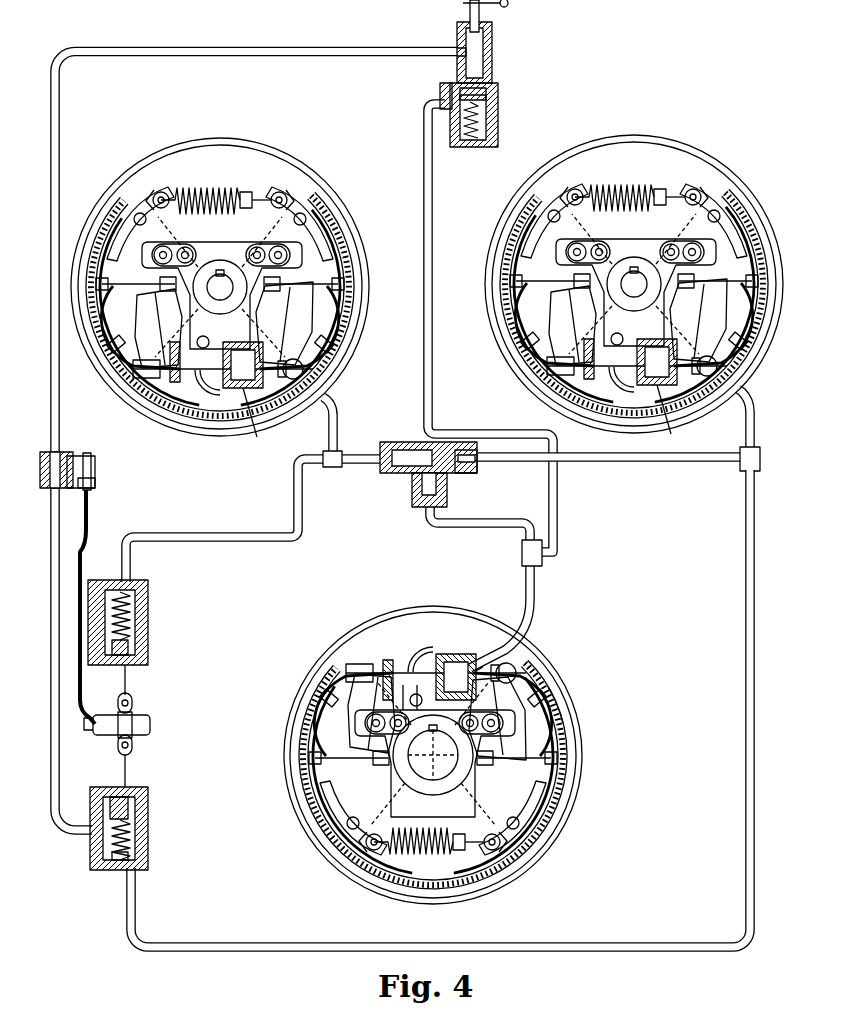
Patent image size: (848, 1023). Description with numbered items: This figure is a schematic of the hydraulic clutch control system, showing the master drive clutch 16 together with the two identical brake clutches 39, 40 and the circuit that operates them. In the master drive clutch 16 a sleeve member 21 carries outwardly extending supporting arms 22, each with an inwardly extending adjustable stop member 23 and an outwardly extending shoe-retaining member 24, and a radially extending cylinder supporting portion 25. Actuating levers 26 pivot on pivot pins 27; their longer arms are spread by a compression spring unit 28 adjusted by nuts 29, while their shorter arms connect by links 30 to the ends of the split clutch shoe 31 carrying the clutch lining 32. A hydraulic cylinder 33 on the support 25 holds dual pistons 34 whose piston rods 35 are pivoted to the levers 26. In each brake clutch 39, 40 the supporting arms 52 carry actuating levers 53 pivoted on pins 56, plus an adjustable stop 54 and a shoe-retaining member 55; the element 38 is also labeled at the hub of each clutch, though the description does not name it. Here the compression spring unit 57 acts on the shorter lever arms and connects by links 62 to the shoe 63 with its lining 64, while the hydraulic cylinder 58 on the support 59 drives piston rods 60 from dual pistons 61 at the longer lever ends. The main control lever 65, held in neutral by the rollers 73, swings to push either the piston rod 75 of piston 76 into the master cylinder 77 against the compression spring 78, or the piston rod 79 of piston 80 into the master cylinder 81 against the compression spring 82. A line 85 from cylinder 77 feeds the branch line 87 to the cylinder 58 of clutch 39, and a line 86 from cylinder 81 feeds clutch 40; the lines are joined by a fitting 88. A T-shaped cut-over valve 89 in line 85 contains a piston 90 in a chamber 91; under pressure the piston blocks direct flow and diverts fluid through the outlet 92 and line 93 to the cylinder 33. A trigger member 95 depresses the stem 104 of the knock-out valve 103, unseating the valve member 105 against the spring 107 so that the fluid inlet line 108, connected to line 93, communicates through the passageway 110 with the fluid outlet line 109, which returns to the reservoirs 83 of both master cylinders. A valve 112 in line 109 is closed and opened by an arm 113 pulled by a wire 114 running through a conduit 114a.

The master drive clutch 16 is at (520, 876).
The sleeve member 21 is at (403, 786).
The supporting arms 22 is at (505, 740).
The adjustable stop member 23 is at (312, 762).
The shoe-retaining member 24 is at (545, 815).
The cylinder supporting portion 25 is at (372, 712).
The actuating levers 26 is at (540, 688).
The pivot pin 27 is at (496, 722).
The compression spring unit 28 is at (436, 856).
The nuts 29 is at (382, 852).
The links 30 is at (400, 668).
The clutch shoe 31 is at (562, 724).
The clutch lining 32 is at (558, 748).
The hydraulic cylinder 33 is at (414, 642).
The dual pistons 34 is at (452, 656).
The piston rods 35 is at (486, 648).
The hub 38 is at (218, 262).
The brake clutch 39 is at (337, 191).
The brake clutch 40 is at (690, 145).
The supporting arms 52 is at (268, 302).
The actuating lever 53 is at (163, 256).
The adjustable stop 54 is at (96, 280).
The shoe-retaining member 55 is at (112, 350).
The pin 56 is at (295, 262).
The compression spring unit 57 is at (212, 185).
The hydraulic cylinder 58 is at (246, 410).
The support 59 is at (172, 312).
The piston rods 60 is at (256, 375).
The dual pistons 61 is at (200, 378).
The links 62 is at (167, 192).
The shoe 63 is at (97, 240).
The lining 64 is at (128, 196).
The main control lever 65 is at (105, 730).
The roller 73 is at (133, 705).
The piston rod 75 is at (128, 685).
The piston 76 is at (135, 645).
The master cylinder 77 is at (148, 615).
The compression spring 78 is at (148, 588).
The piston rod 79 is at (128, 772).
The piston 80 is at (148, 800).
The master cylinder 81 is at (135, 830).
The compression spring 82 is at (140, 852).
The reservoirs 83 is at (108, 580).
The line 85 is at (288, 542).
The line 86 is at (300, 945).
The branch line 87 is at (337, 420).
The fitting 88 is at (760, 457).
The cut-over valve 89 is at (388, 452).
The piston 90 is at (452, 470).
The chamber 91 is at (402, 466).
The outlet 92 is at (415, 498).
The line 93 is at (480, 522).
The trigger member 95 is at (462, 3).
The knock-out valve 103 is at (493, 60).
The valve stem 104 is at (480, 18).
The valve member 105 is at (490, 93).
The spring 107 is at (472, 142).
The fluid inlet line 108 is at (432, 233).
The fluid outlet line 109 is at (322, 48).
The passageway 110 is at (460, 68).
The valve 112 is at (50, 455).
The arm 113 is at (82, 455).
The wire 114 is at (93, 473).
The conduit 114a is at (90, 505).